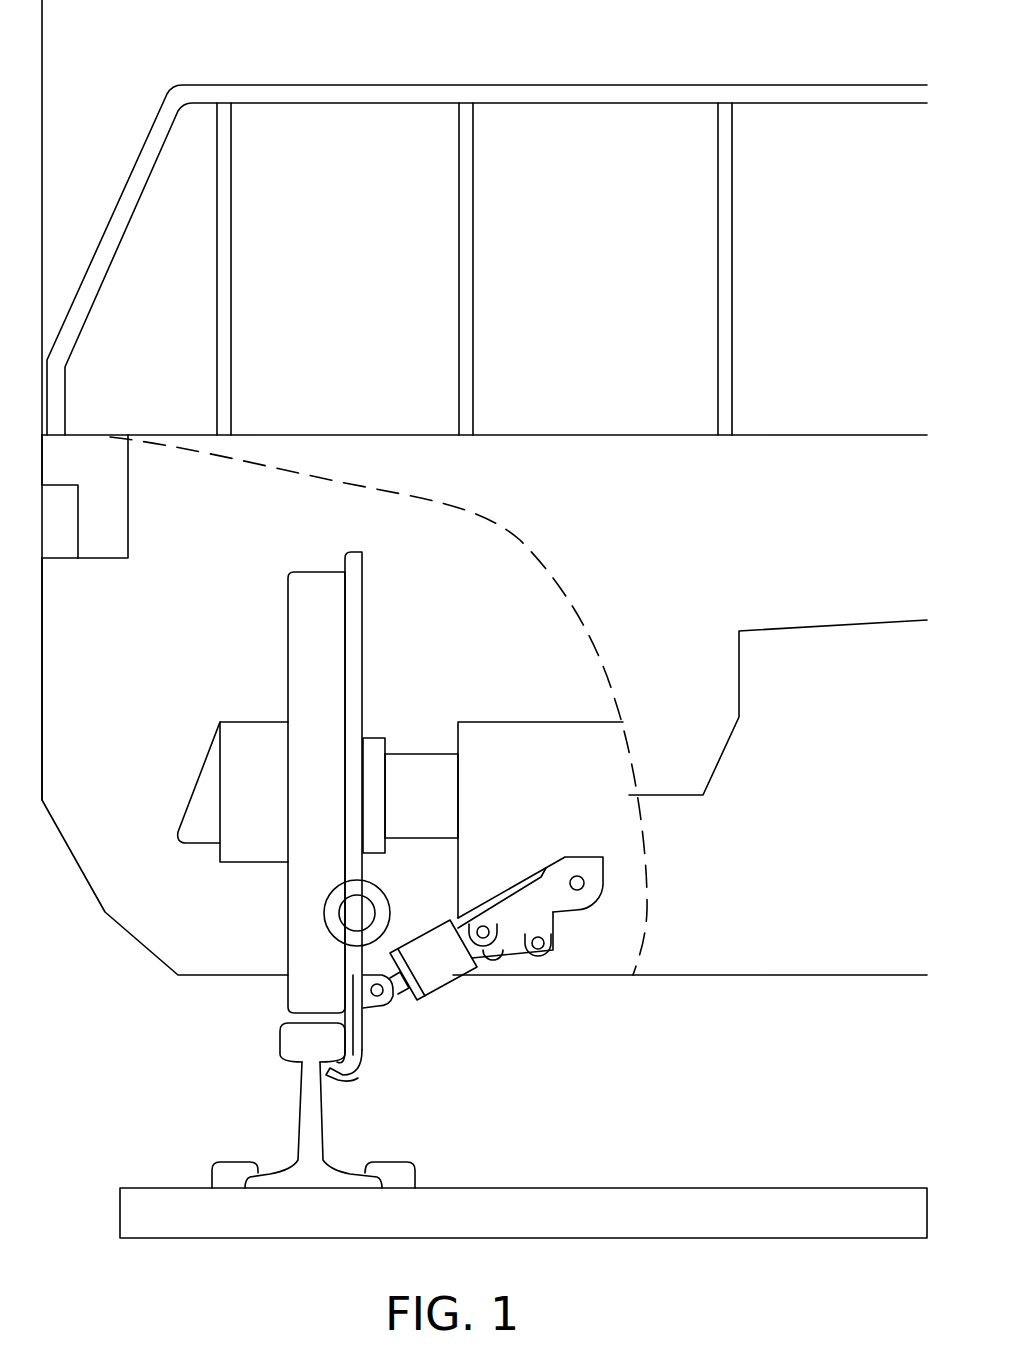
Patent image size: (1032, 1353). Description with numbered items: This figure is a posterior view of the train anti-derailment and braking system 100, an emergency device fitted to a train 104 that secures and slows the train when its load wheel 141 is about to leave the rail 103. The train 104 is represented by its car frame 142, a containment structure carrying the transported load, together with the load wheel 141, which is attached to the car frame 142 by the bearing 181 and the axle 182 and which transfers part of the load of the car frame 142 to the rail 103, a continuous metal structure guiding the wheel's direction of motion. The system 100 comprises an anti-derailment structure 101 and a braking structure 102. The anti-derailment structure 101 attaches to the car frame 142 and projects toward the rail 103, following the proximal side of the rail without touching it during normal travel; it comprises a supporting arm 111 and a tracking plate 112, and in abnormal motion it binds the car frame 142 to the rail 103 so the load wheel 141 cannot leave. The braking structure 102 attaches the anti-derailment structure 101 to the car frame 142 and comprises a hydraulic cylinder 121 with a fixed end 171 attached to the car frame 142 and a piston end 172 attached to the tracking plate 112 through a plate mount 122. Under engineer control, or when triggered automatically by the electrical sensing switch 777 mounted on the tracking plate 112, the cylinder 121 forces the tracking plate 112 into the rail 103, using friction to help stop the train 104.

The train anti-derailment and braking system 100 is at (545, 1088).
The anti-derailment structure 101 is at (310, 923).
The braking structure 102 is at (460, 1000).
The rail 103 is at (294, 1236).
The train 104 is at (287, 607).
The supporting arm 111 is at (388, 895).
The tracking plate 112 is at (363, 1042).
The hydraulic cylinder 121 is at (455, 980).
The plate mount 122 is at (373, 982).
The load wheel 141 is at (315, 660).
The car frame 142 is at (470, 88).
The fixed end 171 is at (584, 880).
The piston end 172 is at (417, 1000).
The bearing 181 is at (373, 748).
The axle 182 is at (422, 770).
The electrical sensing switch 777 is at (375, 955).